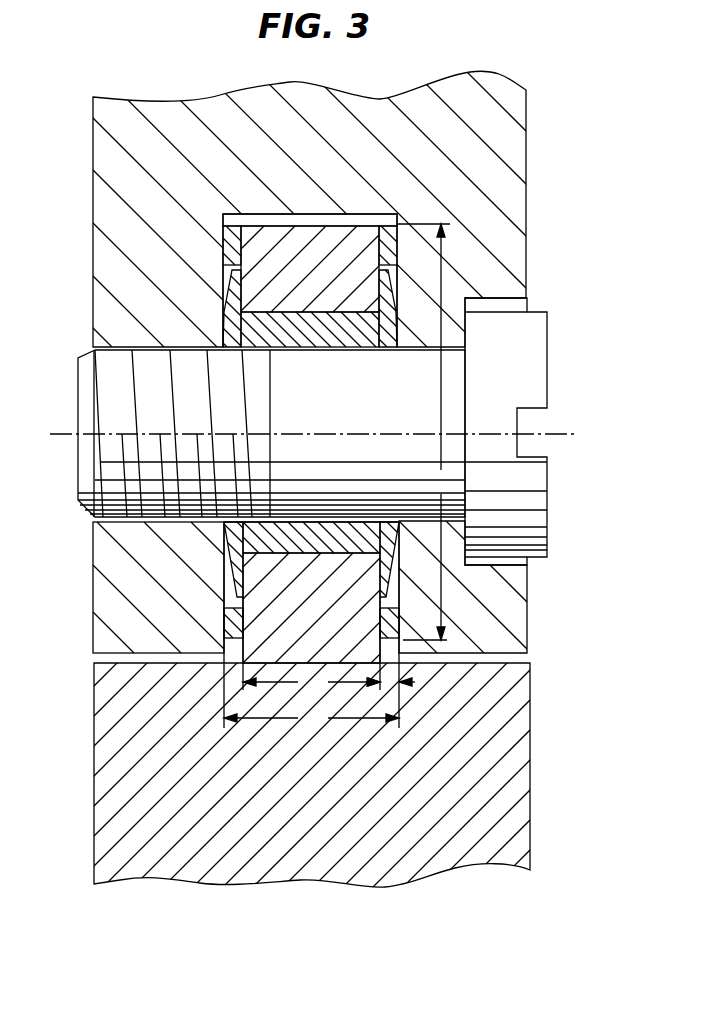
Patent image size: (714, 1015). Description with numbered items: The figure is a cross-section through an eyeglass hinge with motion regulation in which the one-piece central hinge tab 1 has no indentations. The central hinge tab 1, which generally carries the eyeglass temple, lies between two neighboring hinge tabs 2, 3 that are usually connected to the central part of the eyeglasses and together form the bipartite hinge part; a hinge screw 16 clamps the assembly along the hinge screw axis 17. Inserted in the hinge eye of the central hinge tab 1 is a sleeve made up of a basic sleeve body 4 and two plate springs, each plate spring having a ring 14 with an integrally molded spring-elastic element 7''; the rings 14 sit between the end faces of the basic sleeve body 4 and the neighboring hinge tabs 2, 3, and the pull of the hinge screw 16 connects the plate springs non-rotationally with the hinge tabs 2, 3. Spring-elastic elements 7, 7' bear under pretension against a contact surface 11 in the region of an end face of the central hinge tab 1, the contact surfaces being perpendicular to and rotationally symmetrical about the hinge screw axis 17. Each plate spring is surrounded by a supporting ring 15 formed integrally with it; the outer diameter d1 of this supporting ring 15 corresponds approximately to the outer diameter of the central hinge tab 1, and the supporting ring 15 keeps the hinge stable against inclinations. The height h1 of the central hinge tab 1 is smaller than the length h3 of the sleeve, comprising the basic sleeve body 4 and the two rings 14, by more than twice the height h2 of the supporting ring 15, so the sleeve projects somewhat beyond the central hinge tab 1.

The central hinge tab 1 is at (239, 257).
The neighboring hinge tab 2 is at (105, 638).
The neighboring hinge tab 3 is at (520, 627).
The basic sleeve body 4 is at (277, 541).
The spring-elastic element 7 is at (153, 297).
The spring-elastic element 7' is at (472, 297).
The spring-elastic element 7'' is at (150, 625).
The contact surface 11 is at (375, 586).
The ring 14 is at (465, 338).
The supporting ring 15 is at (220, 240).
The hinge screw 16 is at (537, 516).
The hinge screw axis 17 is at (574, 436).
The outer diameter of the supporting ring d1 is at (427, 432).
The height of the central hinge tab h1 is at (311, 687).
The height of the supporting ring h2 is at (407, 687).
The length of the sleeve h3 is at (311, 721).